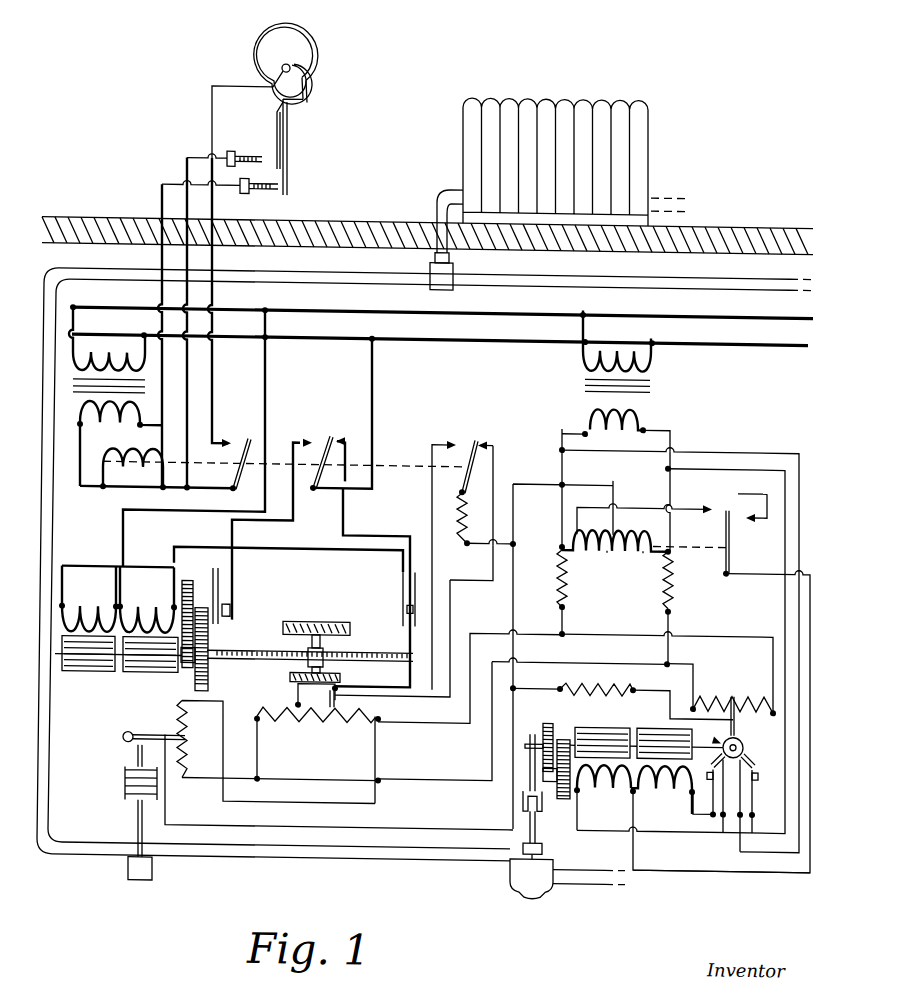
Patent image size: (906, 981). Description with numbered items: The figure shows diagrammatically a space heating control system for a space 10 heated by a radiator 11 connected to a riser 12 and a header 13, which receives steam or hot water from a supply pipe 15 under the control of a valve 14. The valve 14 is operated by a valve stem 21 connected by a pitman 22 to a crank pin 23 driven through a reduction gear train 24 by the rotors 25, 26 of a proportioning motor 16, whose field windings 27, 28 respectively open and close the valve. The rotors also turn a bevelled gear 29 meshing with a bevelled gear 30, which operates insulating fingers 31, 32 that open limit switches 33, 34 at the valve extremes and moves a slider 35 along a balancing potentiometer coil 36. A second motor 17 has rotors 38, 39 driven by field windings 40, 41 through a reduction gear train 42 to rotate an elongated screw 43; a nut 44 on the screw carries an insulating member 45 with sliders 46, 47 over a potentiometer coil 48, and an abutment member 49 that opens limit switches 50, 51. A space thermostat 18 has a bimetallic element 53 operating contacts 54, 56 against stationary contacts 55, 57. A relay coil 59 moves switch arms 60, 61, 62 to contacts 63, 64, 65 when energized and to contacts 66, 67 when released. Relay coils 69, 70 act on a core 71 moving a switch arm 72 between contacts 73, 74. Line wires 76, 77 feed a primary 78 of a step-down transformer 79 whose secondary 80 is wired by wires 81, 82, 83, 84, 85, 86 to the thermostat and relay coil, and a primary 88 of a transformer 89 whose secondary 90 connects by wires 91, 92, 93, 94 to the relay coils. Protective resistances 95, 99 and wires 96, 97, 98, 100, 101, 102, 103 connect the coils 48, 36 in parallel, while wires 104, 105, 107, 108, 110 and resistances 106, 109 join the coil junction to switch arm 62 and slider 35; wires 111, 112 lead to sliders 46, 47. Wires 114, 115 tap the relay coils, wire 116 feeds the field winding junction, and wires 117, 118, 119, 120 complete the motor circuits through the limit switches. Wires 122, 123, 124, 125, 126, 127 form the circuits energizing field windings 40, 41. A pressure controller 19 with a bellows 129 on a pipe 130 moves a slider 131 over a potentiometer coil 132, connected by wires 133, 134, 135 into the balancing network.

The space 10 is at (415, 61).
The radiator 11 is at (550, 103).
The riser 12 is at (437, 223).
The header 13 is at (368, 276).
The valve 14 is at (522, 893).
The supply pipe 15 is at (597, 869).
The proportioning motor 16 is at (705, 880).
The motor 17 is at (118, 693).
The space thermostat 18 is at (246, 32).
The pressure controller 19 is at (118, 737).
The valve stem 21 is at (527, 848).
The pitman 22 is at (530, 765).
The crank pin 23 is at (543, 728).
The reduction gear train 24 is at (553, 800).
The motor rotor 25 is at (605, 730).
The motor rotor 26 is at (655, 730).
The field winding 27 is at (602, 788).
The field winding 28 is at (661, 790).
The bevelled gear 29 is at (709, 736).
The bevelled gear 30 is at (744, 748).
The finger 31 is at (713, 764).
The finger 32 is at (752, 762).
The limit switch 33 is at (712, 778).
The limit switch 34 is at (753, 778).
The slider 35 is at (737, 720).
The balancing potentiometer coil 36 is at (719, 697).
The rotor 38 is at (92, 668).
The rotor 39 is at (140, 668).
The field winding 40 is at (92, 608).
The field winding 41 is at (149, 608).
The reduction gear train 42 is at (188, 670).
The elongated screw 43 is at (261, 653).
The nut 44 is at (325, 657).
The member 45 is at (290, 677).
The slider 46 is at (298, 692).
The slider 47 is at (330, 712).
The potentiometer coil 48 is at (283, 725).
The abutment member 49 is at (315, 624).
The limit switch 50 is at (232, 607).
The limit switch 51 is at (403, 610).
The bimetallic element 53 is at (311, 48).
The contact 54 is at (287, 190).
The stationary contact 55 is at (255, 192).
The contact 56 is at (272, 157).
The stationary contact 57 is at (243, 150).
The relay coil 59 is at (133, 470).
The switch arm 60 is at (238, 487).
The switch arm 61 is at (326, 435).
The switch arm 62 is at (468, 435).
The contact 63 is at (232, 442).
The contact 64 is at (305, 441).
The contact 65 is at (450, 440).
The contact 66 is at (348, 442).
The contact 67 is at (492, 440).
The relay coil 69 is at (580, 553).
The relay coil 70 is at (643, 553).
The core 71 is at (607, 553).
The switch arm 72 is at (731, 545).
The contact 73 is at (715, 504).
The contact 74 is at (753, 508).
The line wire 76 is at (492, 305).
The line wire 77 is at (491, 342).
The primary 78 is at (118, 362).
The step-down transformer 79 is at (150, 390).
The secondary 80 is at (119, 444).
The wire 81 is at (160, 256).
The wire 82 is at (186, 262).
The wire 83 is at (164, 488).
The wire 84 is at (80, 488).
The wire 85 is at (213, 256).
The wire 86 is at (205, 488).
The primary 88 is at (600, 360).
The step-down transformer 89 is at (655, 397).
The secondary 90 is at (618, 428).
The wire 91 is at (560, 432).
The wire 92 is at (560, 538).
The wire 93 is at (678, 434).
The wire 94 is at (672, 528).
The protective resistance 95 is at (560, 580).
The wire 96 is at (565, 617).
The wire 97 is at (470, 634).
The wire 98 is at (615, 638).
The protective resistance 99 is at (672, 580).
The wire 100 is at (672, 628).
The wire 101 is at (560, 661).
The wire 102 is at (256, 755).
The wire 103 is at (678, 660).
The wire 104 is at (526, 491).
The wire 105 is at (471, 546).
The resistance 106 is at (460, 541).
The wire 107 is at (503, 588).
The wire 108 is at (545, 691).
The resistance 109 is at (598, 690).
The wire 110 is at (652, 691).
The wire 111 is at (432, 500).
The wire 112 is at (495, 470).
The wire 114 is at (611, 505).
The wire 115 is at (742, 494).
The wire 116 is at (760, 573).
The wire 117 is at (660, 834).
The wire 118 is at (784, 608).
The wire 119 is at (690, 816).
The wire 120 is at (762, 453).
The wire 122 is at (374, 420).
The wire 123 is at (294, 505).
The wire 124 is at (152, 566).
The wire 125 is at (186, 512).
The wire 126 is at (379, 536).
The wire 127 is at (288, 553).
The bellows 129 is at (125, 785).
The pipe 130 is at (138, 836).
The slider 131 is at (141, 735).
The potentiometer coil 132 is at (178, 702).
The wire 133 is at (335, 781).
The wire 134 is at (200, 780).
The wire 135 is at (428, 829).